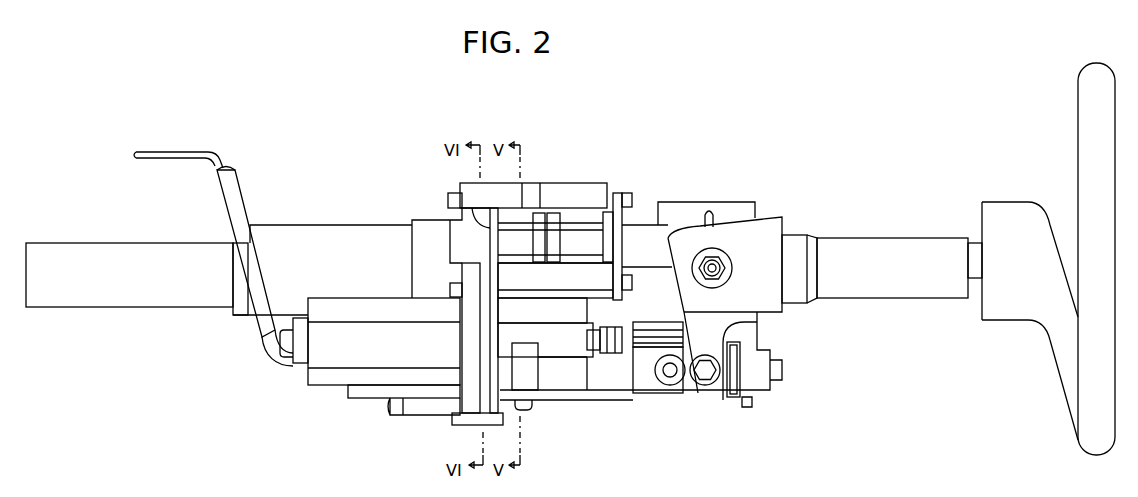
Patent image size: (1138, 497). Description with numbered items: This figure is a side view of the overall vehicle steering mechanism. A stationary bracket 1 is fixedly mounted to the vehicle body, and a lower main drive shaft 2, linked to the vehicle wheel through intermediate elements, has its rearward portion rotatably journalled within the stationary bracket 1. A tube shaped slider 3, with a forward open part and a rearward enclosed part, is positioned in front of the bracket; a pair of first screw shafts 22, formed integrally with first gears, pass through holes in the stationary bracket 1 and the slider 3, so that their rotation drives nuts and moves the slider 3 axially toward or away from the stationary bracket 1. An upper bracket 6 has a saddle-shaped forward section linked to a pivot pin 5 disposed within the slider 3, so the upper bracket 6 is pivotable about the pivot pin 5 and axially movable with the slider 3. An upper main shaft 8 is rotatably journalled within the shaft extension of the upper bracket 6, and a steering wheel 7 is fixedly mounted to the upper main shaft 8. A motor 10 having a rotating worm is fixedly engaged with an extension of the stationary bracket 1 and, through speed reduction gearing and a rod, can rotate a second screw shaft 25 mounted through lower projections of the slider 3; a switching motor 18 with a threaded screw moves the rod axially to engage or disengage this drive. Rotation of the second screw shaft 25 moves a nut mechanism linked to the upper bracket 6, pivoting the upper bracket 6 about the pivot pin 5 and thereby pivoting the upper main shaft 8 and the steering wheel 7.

The stationary bracket 1 is at (546, 183).
The lower main drive shaft 2 is at (160, 245).
The tube shaped slider 3 is at (683, 200).
The pivot pin 5 is at (713, 258).
The upper bracket 6 is at (788, 228).
The steering wheel 7 is at (1085, 214).
The upper main shaft 8 is at (975, 245).
The motor 10 is at (333, 363).
The motor 18 is at (372, 389).
The first screw shafts 22 is at (573, 240).
The second screw shaft 25 is at (726, 378).